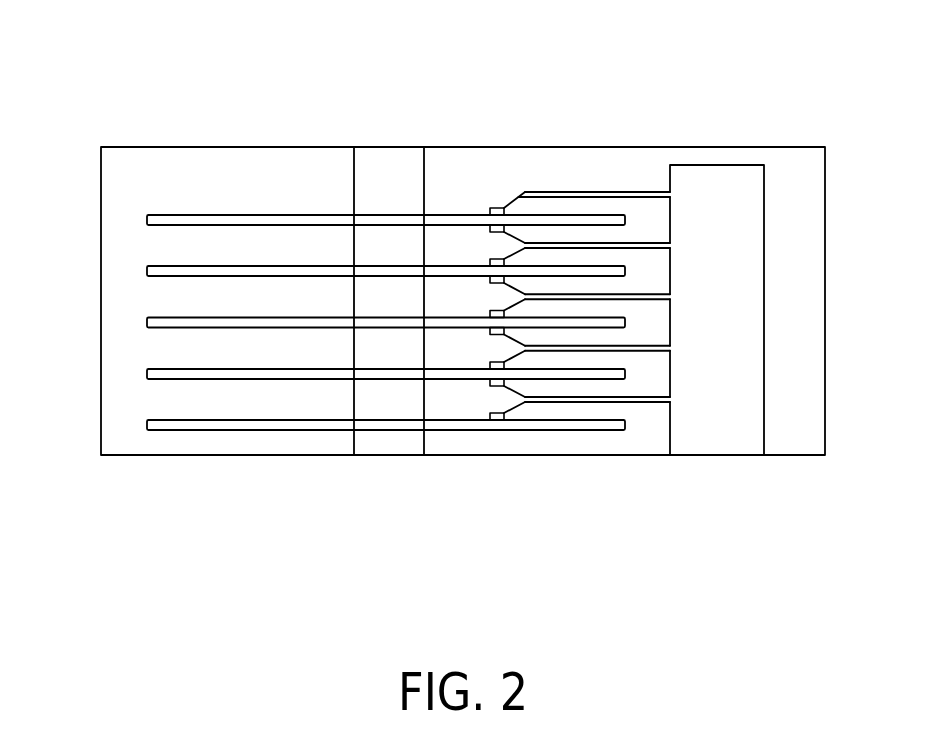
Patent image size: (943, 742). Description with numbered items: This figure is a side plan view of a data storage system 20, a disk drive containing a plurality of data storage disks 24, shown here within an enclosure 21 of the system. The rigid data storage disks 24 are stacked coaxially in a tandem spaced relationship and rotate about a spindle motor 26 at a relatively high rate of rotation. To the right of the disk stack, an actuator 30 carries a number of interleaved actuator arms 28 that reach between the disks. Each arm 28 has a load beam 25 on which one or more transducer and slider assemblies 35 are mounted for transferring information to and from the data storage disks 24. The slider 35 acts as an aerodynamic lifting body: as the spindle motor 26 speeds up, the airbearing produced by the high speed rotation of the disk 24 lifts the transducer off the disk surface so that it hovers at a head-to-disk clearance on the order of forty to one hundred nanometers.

The data storage system 20 is at (722, 123).
The substrate 21 is at (826, 343).
The data storage disks 24 is at (147, 215).
The load beam 25 is at (516, 200).
The spindle motor 26 is at (382, 447).
The actuator arms 28 is at (581, 192).
The actuator 30 is at (715, 430).
The slider 35 is at (491, 208).